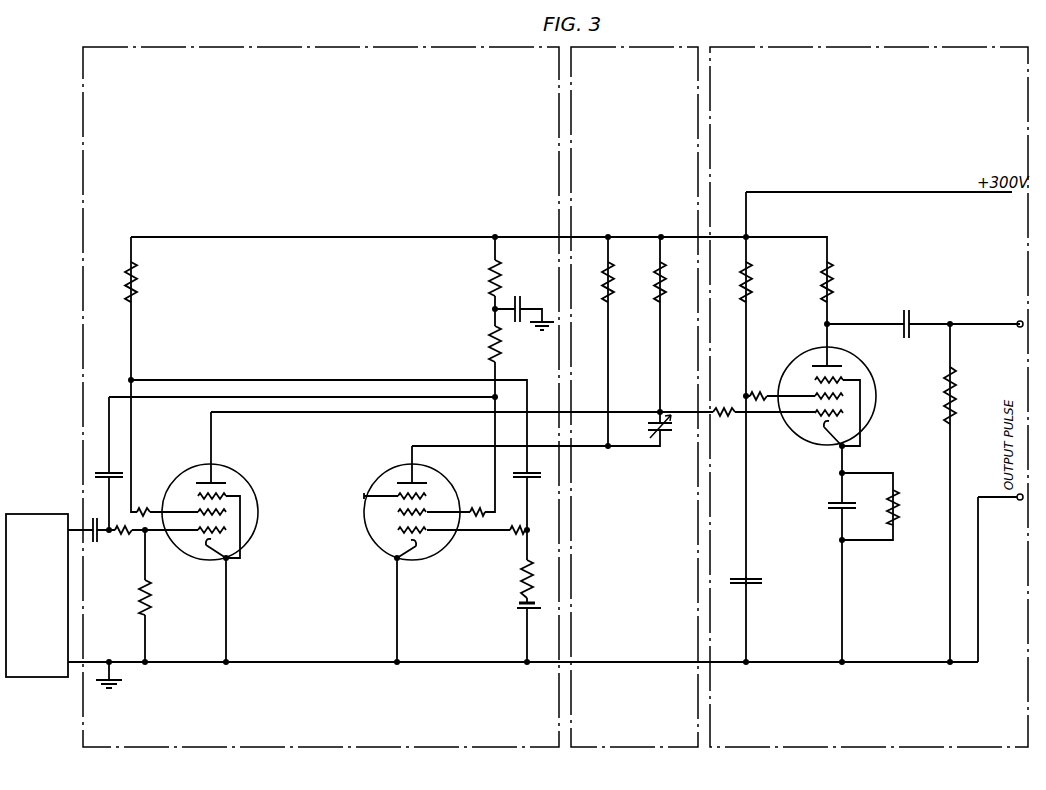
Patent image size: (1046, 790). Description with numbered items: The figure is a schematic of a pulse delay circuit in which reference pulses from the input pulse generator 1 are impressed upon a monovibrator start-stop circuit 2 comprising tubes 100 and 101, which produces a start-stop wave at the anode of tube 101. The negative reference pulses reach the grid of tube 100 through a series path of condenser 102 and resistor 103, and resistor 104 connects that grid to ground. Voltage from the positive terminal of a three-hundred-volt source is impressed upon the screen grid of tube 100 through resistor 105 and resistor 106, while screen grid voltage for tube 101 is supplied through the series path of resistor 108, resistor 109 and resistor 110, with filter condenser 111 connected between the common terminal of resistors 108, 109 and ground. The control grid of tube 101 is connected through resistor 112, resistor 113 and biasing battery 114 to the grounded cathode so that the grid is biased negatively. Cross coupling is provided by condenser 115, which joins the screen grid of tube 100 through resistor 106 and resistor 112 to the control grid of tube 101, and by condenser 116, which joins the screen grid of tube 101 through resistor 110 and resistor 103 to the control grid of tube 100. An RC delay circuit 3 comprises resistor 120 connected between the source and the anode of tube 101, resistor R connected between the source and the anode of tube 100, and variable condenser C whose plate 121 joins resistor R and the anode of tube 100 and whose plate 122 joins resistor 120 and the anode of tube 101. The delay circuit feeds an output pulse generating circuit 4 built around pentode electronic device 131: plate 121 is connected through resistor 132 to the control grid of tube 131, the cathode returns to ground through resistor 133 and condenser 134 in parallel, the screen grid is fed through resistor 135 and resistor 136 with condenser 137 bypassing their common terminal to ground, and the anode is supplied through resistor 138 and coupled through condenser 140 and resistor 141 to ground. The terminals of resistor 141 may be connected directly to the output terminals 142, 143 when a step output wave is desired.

The input pulse generator 1 is at (20, 514).
The monovibrator start-stop circuit 2 is at (437, 58).
The RC delay circuit 3 is at (646, 58).
The output stage section 4 is at (873, 58).
The tube 100 is at (256, 492).
The tube 101 is at (373, 497).
The condenser 102 is at (95, 516).
The resistor 103 is at (118, 543).
The resistor 104 is at (150, 596).
The resistor 105 is at (142, 290).
The resistor 106 is at (151, 499).
The resistor 108 is at (489, 281).
The resistor 109 is at (487, 345).
The resistor 110 is at (478, 511).
The filter condenser 111 is at (520, 295).
The resistor 112 is at (517, 536).
The resistor 113 is at (521, 582).
The biasing battery 114 is at (516, 607).
The condenser 115 is at (540, 474).
The condenser 116 is at (95, 475).
The resistor 120 is at (614, 292).
The resistor R is at (668, 282).
The plate of condenser C 121 is at (648, 423).
The plate of condenser C 122 is at (647, 433).
The variable condenser C is at (666, 435).
The pentode electronic device 131 is at (875, 385).
The resistor 132 is at (717, 406).
The resistor 133 is at (897, 506).
The condenser 134 is at (828, 503).
The resistor 135 is at (752, 292).
The resistor 136 is at (773, 392).
The condenser 137 is at (762, 582).
The resistor 138 is at (833, 278).
The condenser 140 is at (906, 314).
The resistor 141 is at (952, 394).
The output terminal 142 is at (1020, 320).
The output terminal 143 is at (1018, 502).